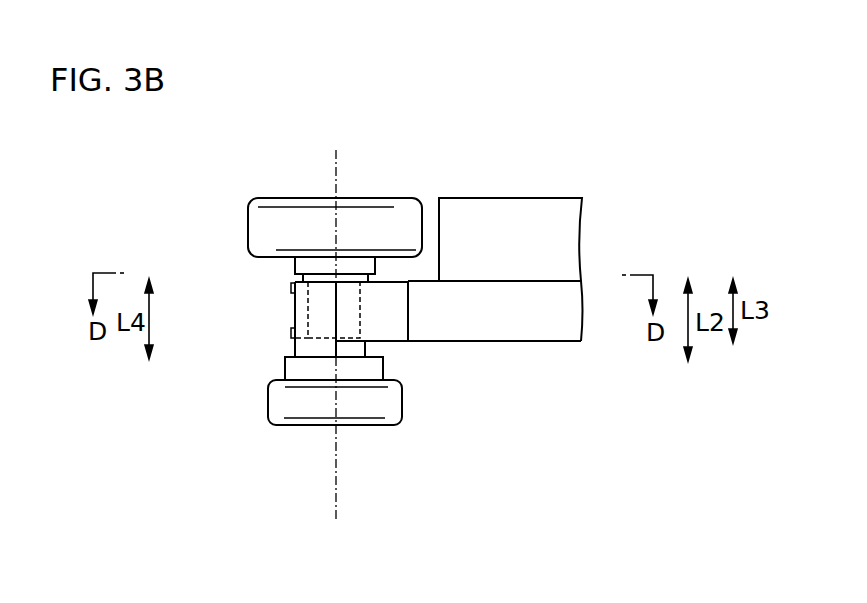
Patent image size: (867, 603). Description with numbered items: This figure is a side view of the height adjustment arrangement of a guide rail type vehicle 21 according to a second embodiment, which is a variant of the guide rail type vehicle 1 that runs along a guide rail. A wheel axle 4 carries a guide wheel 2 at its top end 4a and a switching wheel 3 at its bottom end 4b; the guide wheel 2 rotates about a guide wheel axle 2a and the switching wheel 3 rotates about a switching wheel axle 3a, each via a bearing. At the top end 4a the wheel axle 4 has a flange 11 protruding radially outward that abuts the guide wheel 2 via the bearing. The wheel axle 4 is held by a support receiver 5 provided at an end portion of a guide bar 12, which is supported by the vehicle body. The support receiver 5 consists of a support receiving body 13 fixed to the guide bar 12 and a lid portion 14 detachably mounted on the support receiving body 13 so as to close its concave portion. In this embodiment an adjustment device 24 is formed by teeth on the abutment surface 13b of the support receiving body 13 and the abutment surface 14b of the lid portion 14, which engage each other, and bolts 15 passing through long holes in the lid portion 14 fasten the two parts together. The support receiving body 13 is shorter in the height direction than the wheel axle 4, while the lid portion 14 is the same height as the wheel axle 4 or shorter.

The guide rail type vehicle 1 is at (551, 443).
The guide wheel 2 is at (378, 198).
The guide wheel axle 2a is at (336, 152).
The switching wheel 3 is at (358, 426).
The switching wheel axle 3a is at (336, 510).
The wheel axle 4 is at (338, 316).
The top end 4a is at (313, 274).
The bottom end 4b is at (320, 360).
The support receiver 5 is at (396, 271).
The flange 11 is at (303, 274).
The guide bar 12 is at (507, 342).
The support receiving body 13 is at (397, 342).
The abutment surface 13b is at (335, 310).
The lid portion 14 is at (295, 321).
The abutment surface 14b is at (338, 318).
The bolt 15 is at (291, 287).
The guide rail type vehicle 21 is at (553, 167).
The adjustment device 24 is at (340, 352).